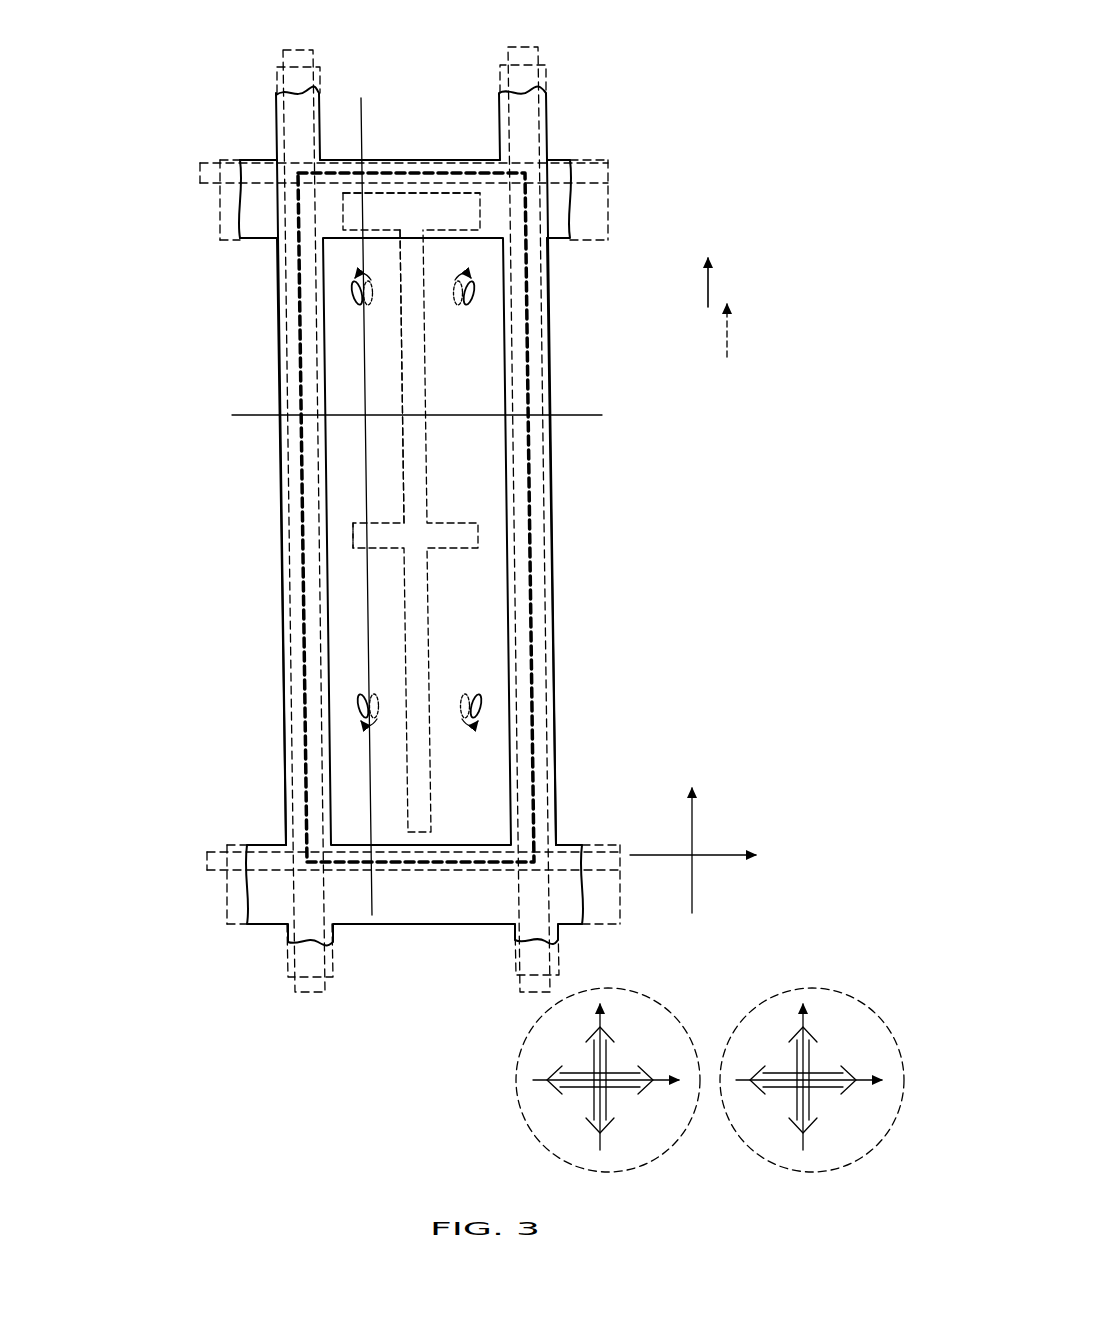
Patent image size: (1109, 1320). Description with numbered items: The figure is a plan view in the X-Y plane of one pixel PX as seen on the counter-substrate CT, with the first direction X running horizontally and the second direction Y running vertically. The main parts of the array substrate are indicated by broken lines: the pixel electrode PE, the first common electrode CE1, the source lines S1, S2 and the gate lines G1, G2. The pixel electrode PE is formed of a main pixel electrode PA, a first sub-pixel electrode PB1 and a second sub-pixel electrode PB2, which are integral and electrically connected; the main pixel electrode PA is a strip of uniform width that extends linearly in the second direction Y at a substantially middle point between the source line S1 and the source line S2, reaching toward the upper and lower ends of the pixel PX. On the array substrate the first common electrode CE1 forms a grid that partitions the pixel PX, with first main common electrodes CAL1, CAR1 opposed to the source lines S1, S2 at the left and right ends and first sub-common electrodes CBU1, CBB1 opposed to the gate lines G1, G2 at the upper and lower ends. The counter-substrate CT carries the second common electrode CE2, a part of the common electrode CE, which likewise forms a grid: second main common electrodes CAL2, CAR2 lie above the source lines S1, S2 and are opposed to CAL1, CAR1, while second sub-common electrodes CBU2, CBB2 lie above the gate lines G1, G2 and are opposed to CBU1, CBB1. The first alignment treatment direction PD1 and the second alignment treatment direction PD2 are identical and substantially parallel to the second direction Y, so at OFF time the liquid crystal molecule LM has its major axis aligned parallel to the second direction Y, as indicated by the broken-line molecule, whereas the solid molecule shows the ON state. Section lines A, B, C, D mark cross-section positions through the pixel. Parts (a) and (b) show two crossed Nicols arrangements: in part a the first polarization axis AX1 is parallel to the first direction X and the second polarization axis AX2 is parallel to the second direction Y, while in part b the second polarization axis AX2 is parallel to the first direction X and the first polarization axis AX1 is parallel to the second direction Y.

The source line S1 is at (298, 48).
The source line S2 is at (521, 46).
The first main common electrode CAL1 is at (322, 78).
The first main common electrode CAR1 is at (549, 77).
The second main common electrode CAL2 is at (277, 332).
The second main common electrode CAR2 is at (556, 332).
The first sub-common electrode CBU1 is at (231, 158).
The second sub-common electrode CBU2 is at (416, 158).
The first sub-common electrode CBB1 is at (235, 928).
The second sub-common electrode CBB2 is at (485, 927).
The gate line G1 is at (200, 181).
The gate line G2 is at (207, 862).
The pixel PX is at (536, 170).
The counter-substrate CT is at (650, 164).
The pixel electrode PE is at (433, 673).
The main pixel electrode PA is at (425, 358).
The first sub-pixel electrode PB1 is at (470, 228).
The second sub-pixel electrode PB2 is at (465, 550).
The common electrode CE is at (428, 946).
The first common electrode CE1 is at (341, 977).
The second common electrode CE2 is at (340, 929).
The first alignment treatment direction PD1 is at (731, 336).
The second alignment treatment direction PD2 is at (712, 290).
The liquid crystal molecule LM is at (603, 499).
The section line A is at (250, 423).
The section line B is at (583, 423).
The section line C is at (359, 140).
The section line D is at (369, 902).
The first direction X is at (702, 855).
The second direction Y is at (690, 837).
The first polarization axis AX1 is at (627, 1090).
The second polarization axis AX2 is at (610, 1052).
The part a is at (594, 1080).
The part b is at (813, 1052).